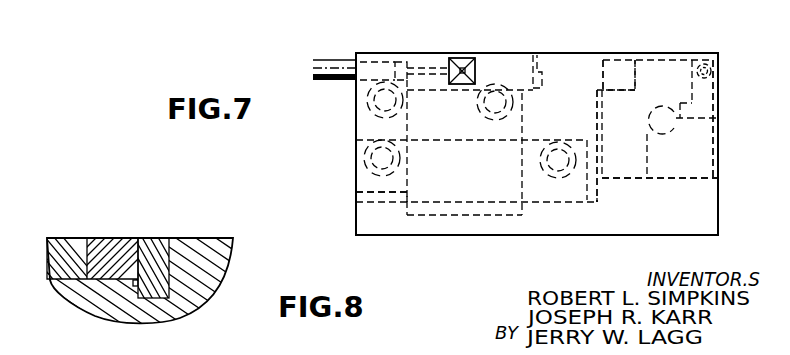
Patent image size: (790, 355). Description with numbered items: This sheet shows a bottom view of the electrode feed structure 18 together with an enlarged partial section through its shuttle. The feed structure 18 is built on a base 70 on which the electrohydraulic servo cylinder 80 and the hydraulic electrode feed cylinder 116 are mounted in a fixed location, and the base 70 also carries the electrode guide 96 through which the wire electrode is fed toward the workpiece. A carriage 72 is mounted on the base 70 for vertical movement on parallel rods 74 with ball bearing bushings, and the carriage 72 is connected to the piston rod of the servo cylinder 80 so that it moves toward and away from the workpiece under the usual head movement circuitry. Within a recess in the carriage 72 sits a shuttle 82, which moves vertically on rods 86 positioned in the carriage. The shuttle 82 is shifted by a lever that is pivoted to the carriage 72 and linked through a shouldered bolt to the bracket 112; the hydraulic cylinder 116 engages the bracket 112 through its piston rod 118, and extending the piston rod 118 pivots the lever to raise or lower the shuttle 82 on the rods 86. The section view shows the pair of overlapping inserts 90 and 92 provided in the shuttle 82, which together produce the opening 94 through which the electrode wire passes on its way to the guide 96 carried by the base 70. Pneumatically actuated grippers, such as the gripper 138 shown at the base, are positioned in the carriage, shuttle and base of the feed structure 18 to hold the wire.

In FIG. 7, the electrode feed structure 18 is at (507, 236).
In FIG. 7, the base 70 is at (718, 222).
In FIG. 7, the carriage 72 is at (598, 200).
In FIG. 7, the parallel rods 74 is at (366, 156).
In FIG. 7, the electrohydraulic servo cylinder 80 is at (356, 192).
In FIG. 7, the shuttle 82 is at (542, 68).
In FIG. 8, the shuttle 82 is at (197, 238).
In FIG. 7, the rods 86 is at (368, 103).
In FIG. 8, the insert 90 is at (140, 210).
In FIG. 8, the insert 92 is at (166, 280).
In FIG. 8, the opening 94 is at (136, 286).
In FIG. 7, the electrode guide 96 is at (475, 62).
In FIG. 7, the bracket 112 is at (719, 157).
In FIG. 7, the hydraulic electrode feed cylinder 116 is at (654, 60).
In FIG. 7, the piston rod 118 is at (718, 118).
In FIG. 7, the pneumatically actuated gripper 138 is at (342, 60).